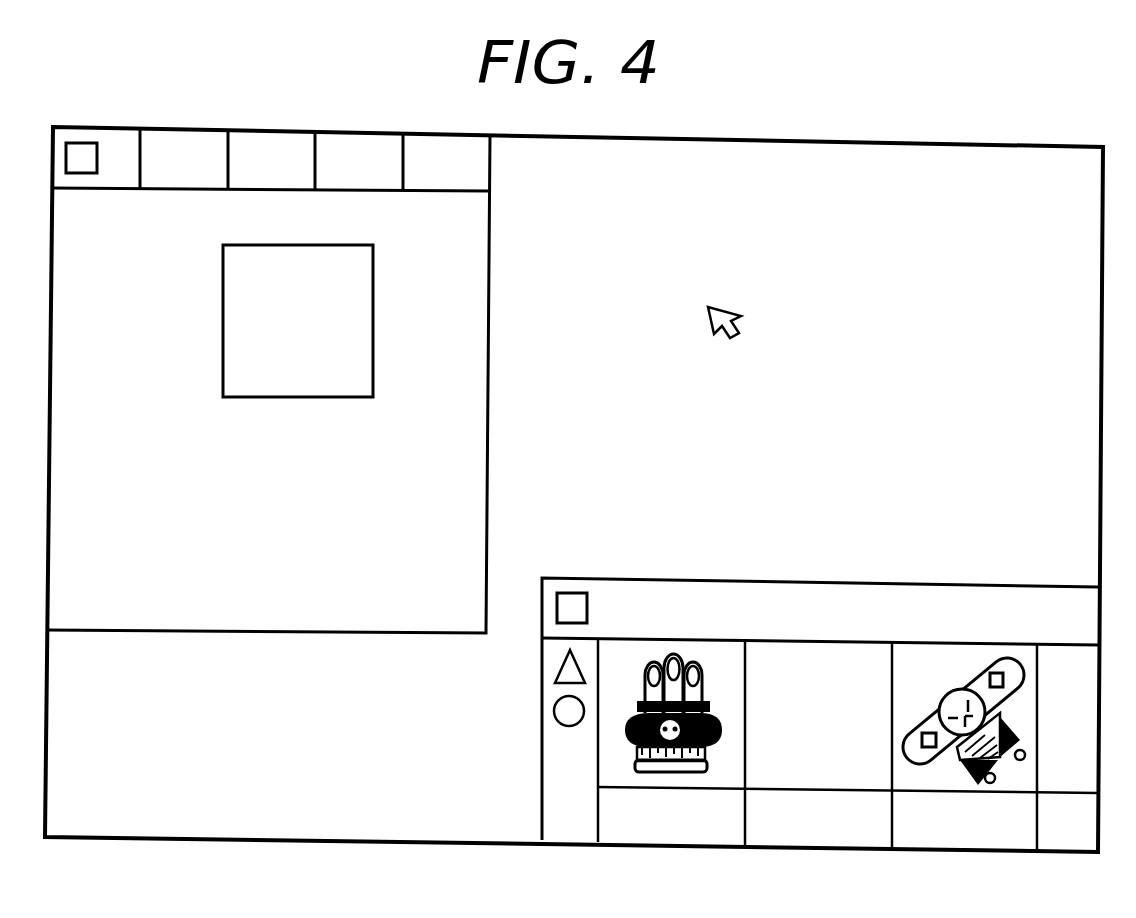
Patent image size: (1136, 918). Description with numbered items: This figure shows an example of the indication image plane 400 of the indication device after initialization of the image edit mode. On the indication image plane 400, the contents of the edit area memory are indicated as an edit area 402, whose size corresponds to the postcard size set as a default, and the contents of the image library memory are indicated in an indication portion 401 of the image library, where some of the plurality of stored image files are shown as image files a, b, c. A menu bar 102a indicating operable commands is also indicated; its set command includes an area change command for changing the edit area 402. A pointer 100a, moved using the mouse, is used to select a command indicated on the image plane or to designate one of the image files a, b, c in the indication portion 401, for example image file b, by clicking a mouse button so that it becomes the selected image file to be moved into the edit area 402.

The indication image plane 400 is at (1062, 145).
The indication portion of the image library 401 is at (997, 587).
The edit area 402 is at (296, 363).
The menu bar 102a is at (188, 129).
The pointer 100a is at (742, 318).
The image file a is at (728, 659).
The image file b is at (877, 659).
The image file c is at (1023, 660).